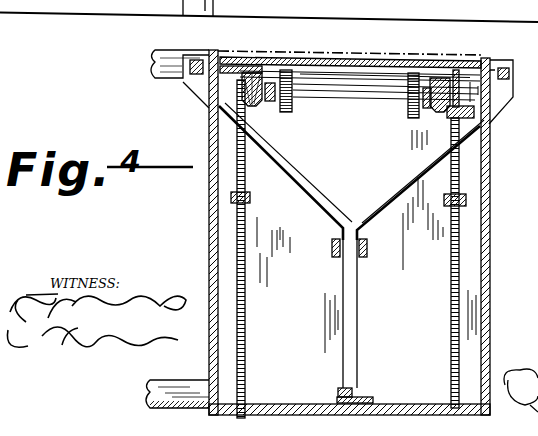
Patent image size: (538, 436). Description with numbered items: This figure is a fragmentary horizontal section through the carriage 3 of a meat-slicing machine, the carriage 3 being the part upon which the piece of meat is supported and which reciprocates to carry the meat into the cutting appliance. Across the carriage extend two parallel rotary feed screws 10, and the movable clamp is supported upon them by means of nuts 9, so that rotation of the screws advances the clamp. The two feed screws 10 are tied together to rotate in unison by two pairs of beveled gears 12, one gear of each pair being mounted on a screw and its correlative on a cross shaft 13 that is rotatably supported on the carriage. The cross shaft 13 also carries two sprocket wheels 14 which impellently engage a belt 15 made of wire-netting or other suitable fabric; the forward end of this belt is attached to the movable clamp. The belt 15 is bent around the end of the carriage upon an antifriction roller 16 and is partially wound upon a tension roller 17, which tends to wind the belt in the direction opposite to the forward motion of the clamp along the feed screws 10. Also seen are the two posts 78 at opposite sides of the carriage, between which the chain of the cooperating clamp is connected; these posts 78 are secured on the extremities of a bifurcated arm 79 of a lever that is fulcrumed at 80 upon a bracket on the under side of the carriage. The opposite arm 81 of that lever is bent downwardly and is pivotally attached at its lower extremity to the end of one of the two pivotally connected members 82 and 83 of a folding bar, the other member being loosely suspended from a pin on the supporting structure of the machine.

The carriage 3 is at (491, 136).
The nuts 9 is at (231, 197).
The feed screws 10 is at (247, 311).
The beveled gears 12 is at (258, 108).
The cross shaft 13 is at (339, 92).
The sprocket wheels 14 is at (286, 112).
The belt 15 is at (357, 52).
The antifriction roller 16 is at (416, 64).
The tension roller 17 is at (378, 84).
The posts 78 is at (195, 58).
The bifurcated arm 79 is at (279, 165).
The fulcrum 80 is at (331, 246).
The opposite arm 81 is at (358, 289).
The folding bar member 82 is at (354, 392).
The folding bar member 83 is at (374, 398).